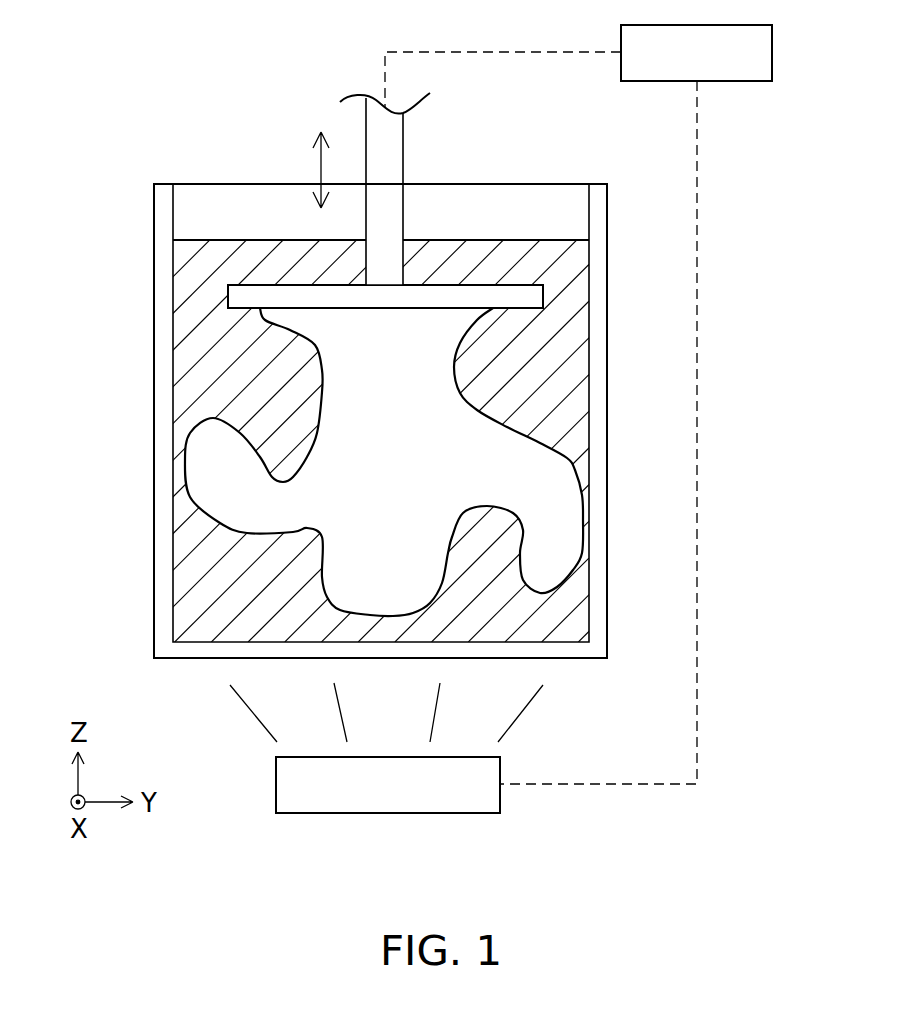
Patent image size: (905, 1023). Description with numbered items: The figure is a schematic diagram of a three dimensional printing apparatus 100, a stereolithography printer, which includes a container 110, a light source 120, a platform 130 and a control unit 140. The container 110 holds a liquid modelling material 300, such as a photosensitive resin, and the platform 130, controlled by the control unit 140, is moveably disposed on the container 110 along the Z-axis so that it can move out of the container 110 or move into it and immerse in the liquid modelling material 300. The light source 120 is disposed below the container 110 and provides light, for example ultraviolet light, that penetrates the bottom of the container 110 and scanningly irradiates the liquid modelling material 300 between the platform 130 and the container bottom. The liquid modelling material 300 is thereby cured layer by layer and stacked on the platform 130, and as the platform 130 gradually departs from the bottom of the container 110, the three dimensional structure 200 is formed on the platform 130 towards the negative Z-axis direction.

The three dimensional printing apparatus 100 is at (751, 623).
The container 110 is at (599, 549).
The light source 120 is at (387, 813).
The platform 130 is at (477, 293).
The control unit 140 is at (772, 52).
The three dimensional structure 200 is at (198, 480).
The liquid modelling material 300 is at (182, 287).